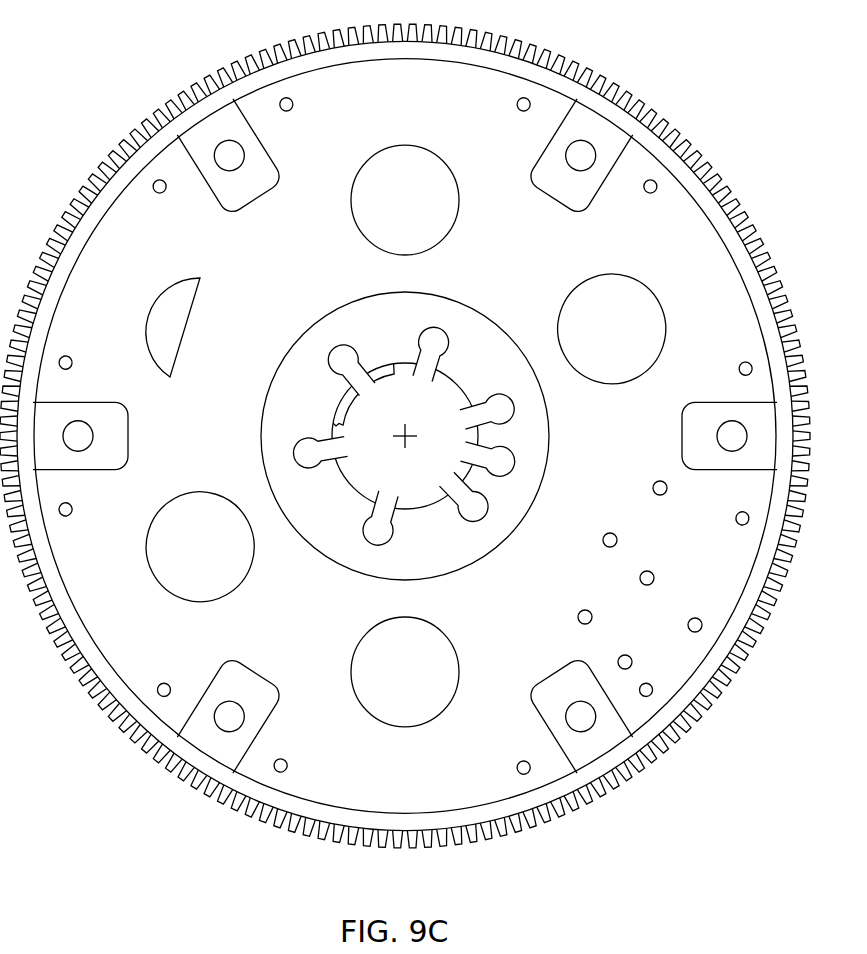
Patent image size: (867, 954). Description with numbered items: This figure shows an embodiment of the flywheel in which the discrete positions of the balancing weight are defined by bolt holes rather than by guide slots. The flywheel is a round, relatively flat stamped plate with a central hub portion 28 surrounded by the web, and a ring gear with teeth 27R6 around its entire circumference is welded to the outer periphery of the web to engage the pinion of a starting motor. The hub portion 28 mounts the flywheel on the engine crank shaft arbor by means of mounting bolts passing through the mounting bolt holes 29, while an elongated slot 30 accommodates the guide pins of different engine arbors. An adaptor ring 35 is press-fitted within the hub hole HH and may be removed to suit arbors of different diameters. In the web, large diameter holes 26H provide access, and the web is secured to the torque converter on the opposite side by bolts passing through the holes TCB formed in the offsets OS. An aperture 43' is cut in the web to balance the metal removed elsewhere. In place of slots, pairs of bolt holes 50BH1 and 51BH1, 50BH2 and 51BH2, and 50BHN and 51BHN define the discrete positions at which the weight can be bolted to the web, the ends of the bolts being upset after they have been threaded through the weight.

The ring gear teeth 27R6 is at (540, 822).
The offset OS is at (583, 123).
The torque converter bolt hole TCB is at (588, 157).
The large diameter hole 26H is at (623, 329).
The half-moon balance cutout 43' is at (111, 263).
The hub portion 28 is at (295, 362).
The hub hole HH is at (405, 436).
The adaptor ring 35 is at (343, 405).
The mounting bolt hole 29 is at (342, 362).
The elongated slot 30 is at (497, 463).
The bolt hole 50BHN is at (604, 534).
The bolt hole 51BHN is at (668, 488).
The bolt hole 51BH2 is at (652, 571).
The bolt hole 51BH1 is at (693, 618).
The bolt hole 50BH2 is at (578, 615).
The bolt hole 50BH1 is at (628, 657).